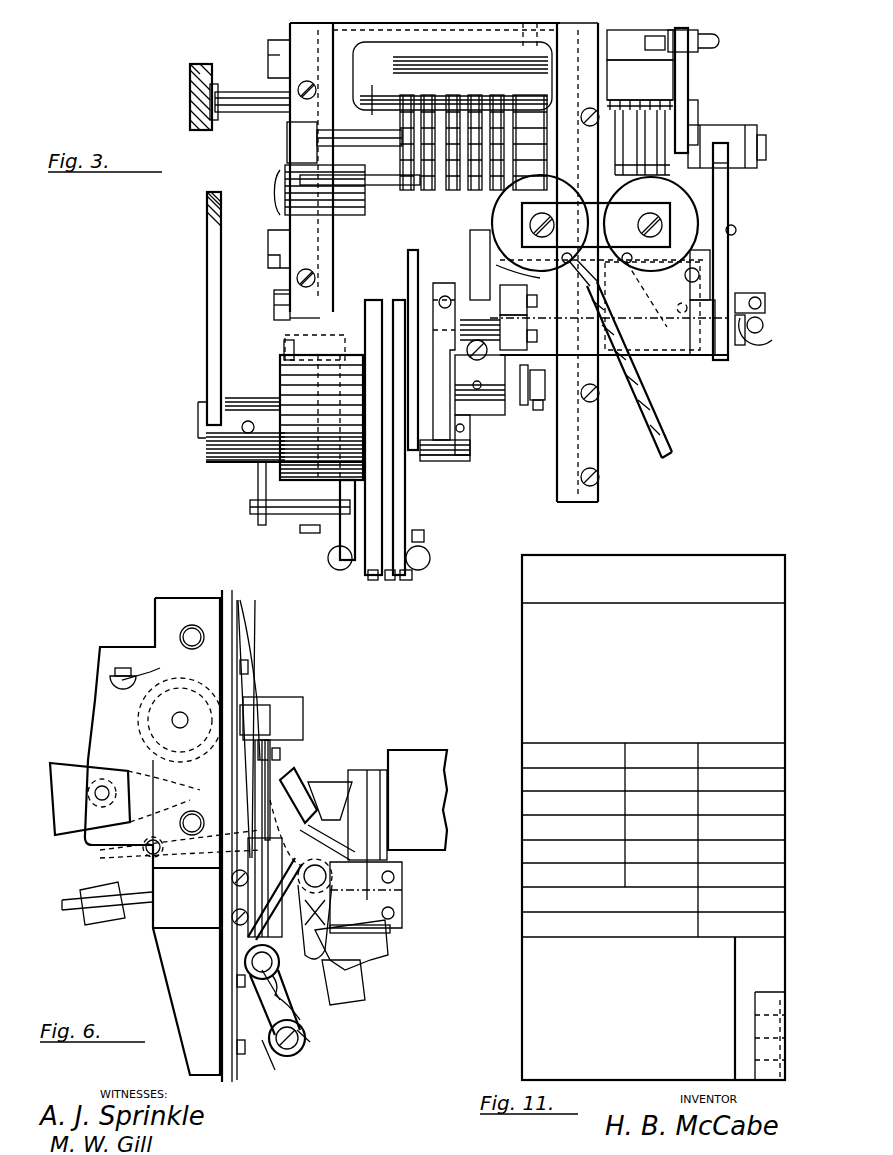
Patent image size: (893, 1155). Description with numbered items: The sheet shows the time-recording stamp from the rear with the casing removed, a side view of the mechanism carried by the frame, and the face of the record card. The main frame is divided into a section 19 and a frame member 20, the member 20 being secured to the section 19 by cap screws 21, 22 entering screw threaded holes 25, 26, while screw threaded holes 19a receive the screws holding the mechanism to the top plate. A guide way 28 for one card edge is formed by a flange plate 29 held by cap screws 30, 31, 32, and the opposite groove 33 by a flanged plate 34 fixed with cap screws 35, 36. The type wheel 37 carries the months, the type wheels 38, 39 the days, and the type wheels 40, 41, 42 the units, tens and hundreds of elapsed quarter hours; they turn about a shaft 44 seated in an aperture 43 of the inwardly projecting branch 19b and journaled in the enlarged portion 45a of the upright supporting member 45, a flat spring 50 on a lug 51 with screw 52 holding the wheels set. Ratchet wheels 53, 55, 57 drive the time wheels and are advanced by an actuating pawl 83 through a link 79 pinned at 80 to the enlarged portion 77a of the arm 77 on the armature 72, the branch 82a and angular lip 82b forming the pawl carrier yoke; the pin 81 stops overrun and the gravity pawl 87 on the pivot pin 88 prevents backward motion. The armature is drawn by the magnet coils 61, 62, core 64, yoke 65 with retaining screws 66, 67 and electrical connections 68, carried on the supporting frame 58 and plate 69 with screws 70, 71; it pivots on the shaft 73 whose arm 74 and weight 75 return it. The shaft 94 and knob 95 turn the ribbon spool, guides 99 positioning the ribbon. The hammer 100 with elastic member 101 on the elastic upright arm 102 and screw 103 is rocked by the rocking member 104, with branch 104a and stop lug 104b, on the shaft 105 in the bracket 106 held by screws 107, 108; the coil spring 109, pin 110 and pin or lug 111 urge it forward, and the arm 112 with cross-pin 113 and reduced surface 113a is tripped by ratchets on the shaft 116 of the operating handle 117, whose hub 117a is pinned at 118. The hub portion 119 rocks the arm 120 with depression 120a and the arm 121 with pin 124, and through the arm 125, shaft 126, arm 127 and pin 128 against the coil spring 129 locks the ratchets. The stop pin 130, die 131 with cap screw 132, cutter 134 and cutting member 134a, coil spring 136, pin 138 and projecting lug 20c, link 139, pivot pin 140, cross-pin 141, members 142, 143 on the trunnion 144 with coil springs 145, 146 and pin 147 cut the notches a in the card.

In FIG. 6, the main frame section 19 is at (152, 836).
In FIG. 3, the screw threaded holes 19a is at (290, 25).
In FIG. 3, the inwardly projecting branch 19b is at (370, 93).
In FIG. 3, the frame member 20 is at (285, 220).
In FIG. 3, the projecting lug 20c is at (300, 530).
In FIG. 3, the cap screw 21 is at (270, 58).
In FIG. 3, the cap screw 22 is at (268, 252).
In FIG. 6, the screw threaded hole 25 is at (180, 637).
In FIG. 6, the screw threaded hole 26 is at (178, 828).
In FIG. 3, the guide way 28 is at (570, 24).
In FIG. 6, the guide way 28 is at (222, 605).
In FIG. 3, the flange plate 29 is at (577, 262).
In FIG. 6, the flange plate 29 is at (243, 630).
In FIG. 3, the cap screw 30 is at (583, 120).
In FIG. 6, the cap screw 30 is at (250, 668).
In FIG. 3, the cap screw 31 is at (598, 394).
In FIG. 6, the cap screw 31 is at (237, 985).
In FIG. 3, the cap screw 32 is at (598, 480).
In FIG. 6, the cap screw 32 is at (243, 1055).
In FIG. 3, the groove 33 is at (326, 26).
In FIG. 3, the flanged plate 34 is at (311, 167).
In FIG. 3, the cap screw 35 is at (306, 81).
In FIG. 3, the cap screw 36 is at (307, 268).
In FIG. 3, the type wheel 37 is at (530, 95).
In FIG. 3, the type wheel 38 is at (498, 95).
In FIG. 3, the type wheel 39 is at (477, 95).
In FIG. 3, the type wheel 40 is at (412, 95).
In FIG. 3, the type wheel 41 is at (430, 95).
In FIG. 3, the type wheel 42 is at (455, 95).
In FIG. 6, the aperture 43 is at (180, 720).
In FIG. 3, the shaft 44 is at (766, 150).
In FIG. 3, the upright supporting member 45 is at (728, 200).
In FIG. 3, the enlarged portion 45a is at (740, 168).
In FIG. 6, the flat spring 50 is at (145, 672).
In FIG. 6, the lug or pin 51 is at (110, 685).
In FIG. 6, the screw 52 is at (115, 670).
In FIG. 3, the ratchet wheel 53 is at (688, 122).
In FIG. 3, the ratchet wheel 55 is at (633, 136).
In FIG. 3, the ratchet wheel 57 is at (614, 172).
In FIG. 3, the supporting frame 58 is at (610, 307).
In FIG. 6, the supporting frame 58 is at (343, 815).
In FIG. 3, the coil 61 is at (651, 224).
In FIG. 3, the coil 62 is at (540, 223).
In FIG. 6, the coil 62 is at (417, 800).
In FIG. 6, the core 64 is at (330, 801).
In FIG. 3, the yoke 65 is at (596, 225).
In FIG. 3, the retaining screw 66 is at (662, 228).
In FIG. 3, the retaining screw 67 is at (530, 228).
In FIG. 3, the electrical connections 68 is at (655, 425).
In FIG. 6, the plate 69 is at (366, 895).
In FIG. 3, the screw 70 is at (538, 300).
In FIG. 6, the screw 70 is at (396, 876).
In FIG. 3, the screw 71 is at (538, 338).
In FIG. 6, the screw 71 is at (396, 913).
In FIG. 6, the armature 72 is at (295, 785).
In FIG. 3, the shaft 73 is at (768, 300).
In FIG. 3, the arm 74 is at (765, 322).
In FIG. 6, the arm 74 is at (140, 902).
In FIG. 3, the weight 75 is at (768, 337).
In FIG. 6, the weight 75 is at (102, 903).
In FIG. 3, the arm 77 is at (690, 88).
In FIG. 6, the arm 77 is at (257, 686).
In FIG. 3, the enlarged portion 77a is at (668, 46).
In FIG. 3, the link 79 is at (716, 40).
In FIG. 3, the pin 80 is at (690, 30).
In FIG. 3, the pin 81 is at (640, 85).
In FIG. 3, the laterally extending branch 82a is at (752, 124).
In FIG. 3, the angular lip 82b is at (758, 132).
In FIG. 3, the actuating pawl 83 is at (640, 45).
In FIG. 6, the gravity pawl 87 is at (92, 795).
In FIG. 3, the pivot pin 88 is at (738, 230).
In FIG. 6, the pivot pin 88 is at (95, 790).
In FIG. 3, the shaft 94 is at (245, 88).
In FIG. 3, the knob 95 is at (190, 100).
In FIG. 3, the guides 99 is at (395, 74).
In FIG. 6, the hammer 100 is at (303, 712).
In FIG. 6, the elastic member 101 is at (270, 712).
In FIG. 3, the elastic upright arm 102 is at (478, 263).
In FIG. 6, the elastic upright arm 102 is at (272, 790).
In FIG. 6, the screw 103 is at (285, 752).
In FIG. 3, the rocking member 104 is at (480, 400).
In FIG. 6, the rocking member 104 is at (290, 985).
In FIG. 3, the upwardly extending branch 104a is at (536, 280).
In FIG. 6, the upwardly extending branch 104a is at (268, 842).
In FIG. 6, the stop lug 104b is at (250, 918).
In FIG. 3, the shaft 105 is at (545, 380).
In FIG. 6, the shaft 105 is at (305, 1005).
In FIG. 6, the bracket 106 is at (248, 895).
In FIG. 6, the screw 107 is at (232, 880).
In FIG. 6, the screw 108 is at (232, 918).
In FIG. 3, the coil spring 109 is at (522, 405).
In FIG. 3, the pin 110 is at (543, 405).
In FIG. 3, the pin or lug 111 is at (490, 352).
In FIG. 3, the arm 112 is at (388, 490).
In FIG. 6, the arm 112 is at (268, 1048).
In FIG. 6, the cross-pin 113 is at (302, 1050).
In FIG. 6, the reduced surface 113a is at (326, 1062).
In FIG. 3, the shaft 116 is at (475, 445).
In FIG. 3, the operating handle 117 is at (207, 240).
In FIG. 3, the hub 117a is at (206, 460).
In FIG. 3, the pin 118 is at (248, 421).
In FIG. 3, the hub portion 119 is at (425, 465).
In FIG. 3, the arm 120 is at (470, 455).
In FIG. 6, the arm 120 is at (351, 945).
In FIG. 6, the depression 120a is at (341, 982).
In FIG. 3, the arm 121 is at (460, 462).
In FIG. 3, the pin 124 is at (275, 290).
In FIG. 3, the arm 125 is at (446, 361).
In FIG. 6, the arm 125 is at (380, 935).
In FIG. 3, the shaft 126 is at (593, 335).
In FIG. 6, the shaft 126 is at (328, 877).
In FIG. 3, the arm 127 is at (712, 292).
In FIG. 6, the arm 127 is at (372, 825).
In FIG. 3, the pin 128 is at (746, 256).
In FIG. 6, the pin 128 is at (150, 850).
In FIG. 3, the coil spring 129 is at (460, 282).
In FIG. 6, the coil spring 129 is at (430, 893).
In FIG. 3, the stop pin 130 is at (283, 348).
In FIG. 3, the die 131 is at (274, 306).
In FIG. 3, the cap screw 132 is at (274, 296).
In FIG. 3, the cutter 134 is at (340, 520).
In FIG. 3, the cutting member 134a is at (320, 324).
In FIG. 3, the coil spring 136 is at (258, 482).
In FIG. 3, the pin 138 is at (250, 510).
In FIG. 3, the link 139 is at (390, 580).
In FIG. 3, the pivot pin 140 is at (330, 565).
In FIG. 3, the cross-pin 141 is at (425, 538).
In FIG. 3, the member 142 is at (372, 580).
In FIG. 3, the member 143 is at (410, 580).
In FIG. 3, the trunnion 144 is at (280, 196).
In FIG. 3, the coil spring 145 is at (290, 185).
In FIG. 3, the coil spring 146 is at (330, 180).
In FIG. 3, the pin 147 is at (285, 138).
In FIG. 11, the notches a is at (775, 1068).